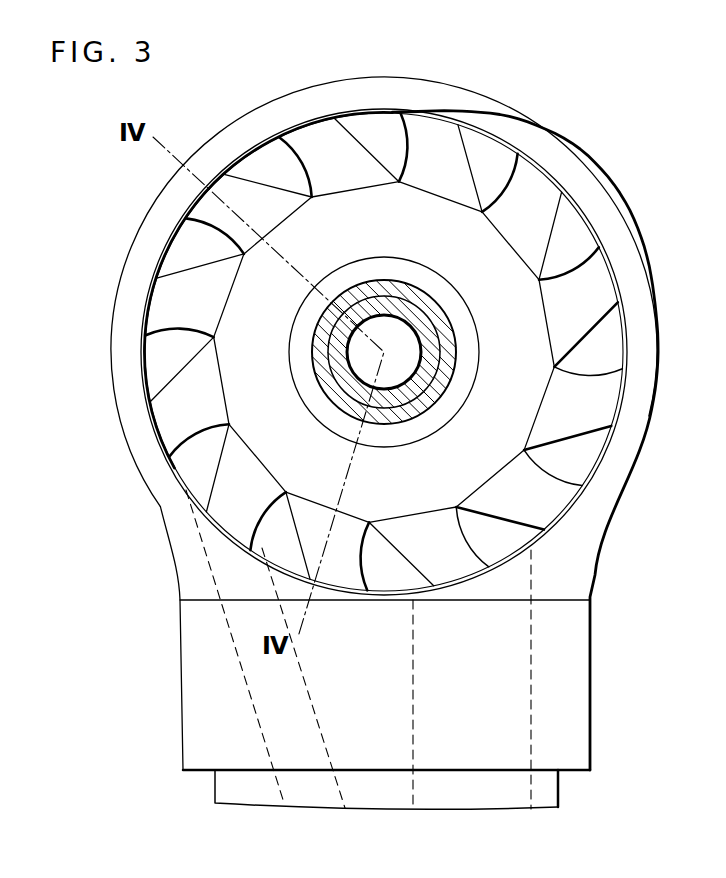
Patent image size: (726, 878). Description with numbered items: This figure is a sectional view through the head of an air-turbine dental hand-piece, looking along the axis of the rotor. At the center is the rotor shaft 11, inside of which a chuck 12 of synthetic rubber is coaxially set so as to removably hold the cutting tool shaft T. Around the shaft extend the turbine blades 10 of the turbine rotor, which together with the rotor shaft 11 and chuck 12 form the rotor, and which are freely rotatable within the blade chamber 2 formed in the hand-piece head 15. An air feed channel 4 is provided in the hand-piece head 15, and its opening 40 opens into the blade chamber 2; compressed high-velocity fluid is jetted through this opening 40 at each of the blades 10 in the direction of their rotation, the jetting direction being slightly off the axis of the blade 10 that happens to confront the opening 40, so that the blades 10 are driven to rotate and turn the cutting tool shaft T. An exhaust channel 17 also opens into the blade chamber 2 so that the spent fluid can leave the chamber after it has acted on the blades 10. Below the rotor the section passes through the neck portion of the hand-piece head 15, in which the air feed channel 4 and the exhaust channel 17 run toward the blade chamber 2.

The blade chamber 2 is at (315, 232).
The turbine blades 10 is at (416, 125).
The rotor shaft 11 is at (437, 313).
The chuck 12 is at (405, 312).
The cutting tool shaft T is at (380, 330).
The opening of the air feed channel 40 is at (210, 533).
The hand-piece head 15 is at (208, 724).
The air feed channel 4 is at (270, 718).
The exhaust channel 17 is at (500, 720).